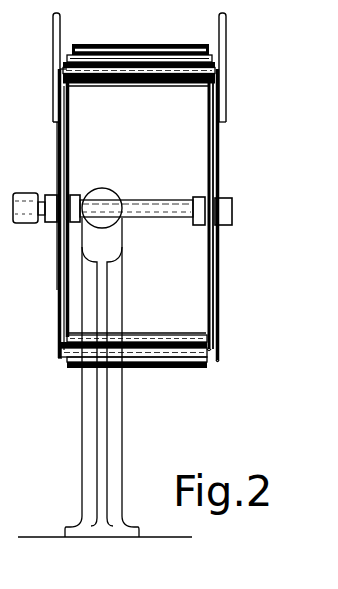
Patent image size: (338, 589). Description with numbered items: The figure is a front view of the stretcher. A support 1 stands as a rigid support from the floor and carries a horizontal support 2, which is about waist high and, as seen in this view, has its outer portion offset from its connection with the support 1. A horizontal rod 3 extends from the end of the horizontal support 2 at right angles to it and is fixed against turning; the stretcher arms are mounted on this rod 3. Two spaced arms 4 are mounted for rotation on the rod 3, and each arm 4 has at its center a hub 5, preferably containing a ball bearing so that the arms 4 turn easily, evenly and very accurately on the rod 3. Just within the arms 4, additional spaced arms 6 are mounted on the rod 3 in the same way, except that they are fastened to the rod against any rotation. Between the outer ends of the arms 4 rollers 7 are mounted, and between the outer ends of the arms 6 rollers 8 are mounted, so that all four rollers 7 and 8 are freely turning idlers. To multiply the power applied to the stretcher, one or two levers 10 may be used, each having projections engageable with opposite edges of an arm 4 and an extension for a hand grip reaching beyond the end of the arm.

The support 1 is at (120, 428).
The horizontal support 2 is at (22, 193).
The horizontal rod 3 is at (148, 201).
The arm 4 is at (57, 288).
The hub 5 is at (50, 225).
The additional spaced arm 6 is at (70, 152).
The roller 7 is at (157, 50).
The roller 8 is at (175, 88).
The lever 10 is at (53, 29).